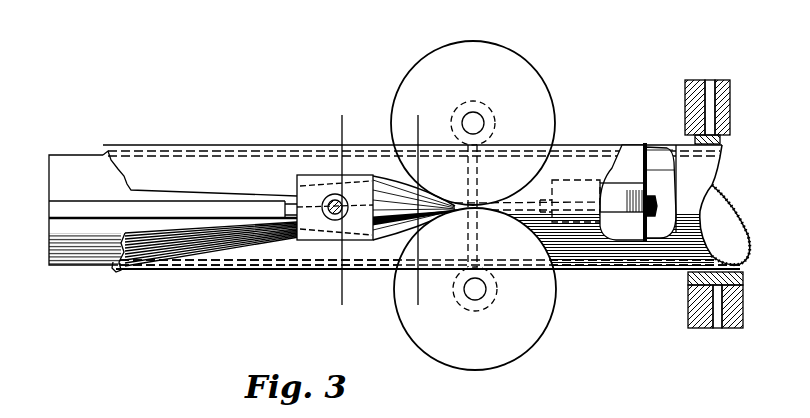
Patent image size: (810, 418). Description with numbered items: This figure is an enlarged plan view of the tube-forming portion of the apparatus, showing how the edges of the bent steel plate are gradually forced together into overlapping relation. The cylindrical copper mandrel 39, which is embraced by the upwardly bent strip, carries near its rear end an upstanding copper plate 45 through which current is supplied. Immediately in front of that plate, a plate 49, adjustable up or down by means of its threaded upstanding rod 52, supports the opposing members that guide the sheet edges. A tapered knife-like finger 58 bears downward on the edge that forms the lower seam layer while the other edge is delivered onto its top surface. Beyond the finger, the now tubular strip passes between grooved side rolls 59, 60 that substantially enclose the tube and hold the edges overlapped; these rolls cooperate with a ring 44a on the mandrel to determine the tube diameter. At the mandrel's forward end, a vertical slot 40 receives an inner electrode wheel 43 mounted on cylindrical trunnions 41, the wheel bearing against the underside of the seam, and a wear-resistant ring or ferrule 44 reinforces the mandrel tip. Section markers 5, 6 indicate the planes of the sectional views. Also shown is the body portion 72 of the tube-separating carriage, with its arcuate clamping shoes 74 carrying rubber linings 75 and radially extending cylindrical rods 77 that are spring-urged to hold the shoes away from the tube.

The mandrel 39 is at (79, 166).
The upstanding plate 45 is at (66, 205).
The upstanding rod 52 is at (273, 208).
The plate 49 is at (311, 184).
The tapered knife-like finger 58 is at (396, 202).
The side roll 59 is at (419, 84).
The side roll 60 is at (426, 322).
The ring 44a is at (478, 168).
The section line 5 is at (349, 294).
The section line 6 is at (426, 294).
The cylindrical trunnion 41 is at (584, 163).
The vertical slot 40 is at (628, 186).
The electrode wheel 43 is at (626, 190).
The ring or ferrule 44 is at (667, 165).
The rubber lining 75 is at (733, 261).
The body portion 72 is at (685, 94).
The shoe 74 is at (688, 279).
The cylindrical rod 77 is at (719, 304).